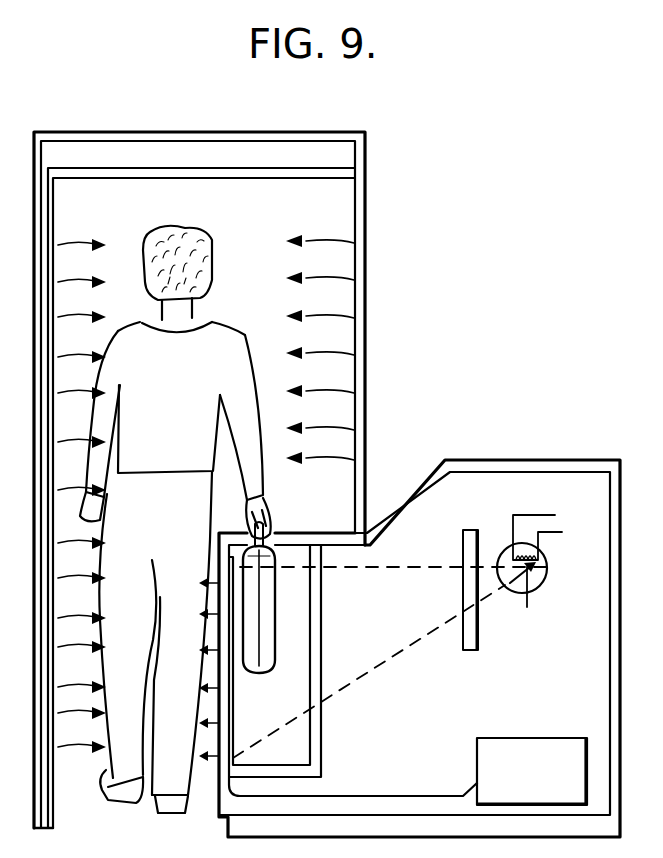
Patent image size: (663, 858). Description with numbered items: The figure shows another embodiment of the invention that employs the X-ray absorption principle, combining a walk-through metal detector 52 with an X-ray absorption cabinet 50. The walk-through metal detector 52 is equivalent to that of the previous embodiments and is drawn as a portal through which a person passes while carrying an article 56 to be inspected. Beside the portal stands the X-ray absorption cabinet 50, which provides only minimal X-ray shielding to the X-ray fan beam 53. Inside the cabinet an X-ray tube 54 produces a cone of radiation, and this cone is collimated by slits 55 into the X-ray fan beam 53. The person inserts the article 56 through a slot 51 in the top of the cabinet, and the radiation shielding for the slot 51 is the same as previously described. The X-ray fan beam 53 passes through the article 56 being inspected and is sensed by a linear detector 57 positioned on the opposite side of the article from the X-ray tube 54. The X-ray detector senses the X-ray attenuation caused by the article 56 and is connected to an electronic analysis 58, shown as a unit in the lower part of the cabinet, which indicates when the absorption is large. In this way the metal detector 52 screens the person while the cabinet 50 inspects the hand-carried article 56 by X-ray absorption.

The X-ray absorption cabinet 50 is at (496, 460).
The slot 51 is at (295, 520).
The walk-through metal detector 52 is at (322, 155).
The X-ray fan beam 53 is at (416, 572).
The X-ray tube 54 is at (547, 568).
The slits 55 is at (481, 516).
The article 56 is at (264, 560).
The linear detector 57 is at (232, 689).
The electronic analysis 58 is at (538, 750).